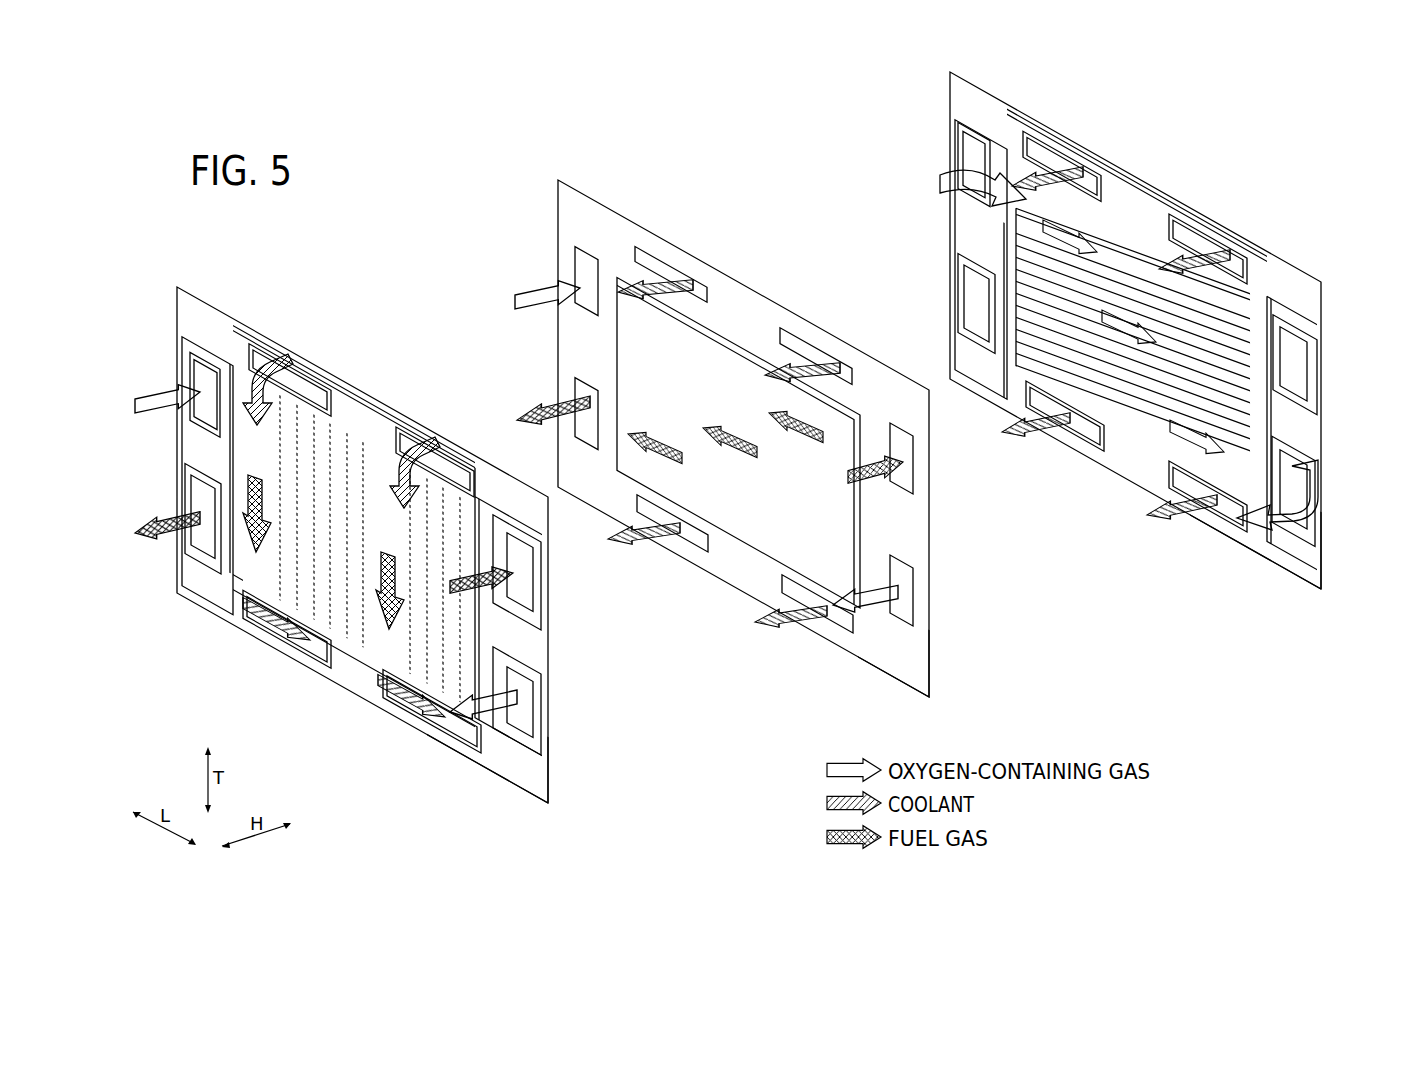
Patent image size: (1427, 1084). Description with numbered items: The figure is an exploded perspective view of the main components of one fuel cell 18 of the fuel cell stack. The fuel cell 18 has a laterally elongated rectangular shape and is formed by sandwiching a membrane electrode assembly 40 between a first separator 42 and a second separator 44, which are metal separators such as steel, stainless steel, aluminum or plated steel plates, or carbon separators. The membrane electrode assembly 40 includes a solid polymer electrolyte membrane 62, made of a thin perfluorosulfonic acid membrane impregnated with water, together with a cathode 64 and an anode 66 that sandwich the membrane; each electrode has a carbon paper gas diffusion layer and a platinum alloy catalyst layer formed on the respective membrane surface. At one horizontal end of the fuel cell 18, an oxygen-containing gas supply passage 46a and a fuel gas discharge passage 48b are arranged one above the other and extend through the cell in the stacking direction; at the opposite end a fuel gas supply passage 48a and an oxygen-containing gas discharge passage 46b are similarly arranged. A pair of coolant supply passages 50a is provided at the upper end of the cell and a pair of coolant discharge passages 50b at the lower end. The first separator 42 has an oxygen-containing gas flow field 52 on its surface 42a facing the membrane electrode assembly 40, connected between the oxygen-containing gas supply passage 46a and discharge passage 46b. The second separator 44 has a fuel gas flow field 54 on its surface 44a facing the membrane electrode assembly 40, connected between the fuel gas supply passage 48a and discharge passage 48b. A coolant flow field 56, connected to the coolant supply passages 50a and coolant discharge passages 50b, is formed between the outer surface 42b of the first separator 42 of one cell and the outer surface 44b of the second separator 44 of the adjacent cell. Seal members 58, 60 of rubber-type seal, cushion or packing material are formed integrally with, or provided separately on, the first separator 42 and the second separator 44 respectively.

The fuel cell 18 is at (367, 239).
The membrane electrode assembly 40 is at (556, 196).
The first separator 42 is at (948, 89).
The surface of the first separator 42a is at (1265, 545).
The surface of the first separator 42b is at (1304, 556).
The second separator 44 is at (174, 302).
The surface of the second separator 44a is at (524, 772).
The surface of the second separator 44b is at (492, 757).
The oxygen-containing gas supply passage 46a is at (200, 377).
The oxygen-containing gas discharge passage 46b is at (533, 720).
The fuel gas supply passage 48a is at (530, 576).
The fuel gas discharge passage 48b is at (200, 518).
The coolant supply passages 50a is at (307, 372).
The coolant discharge passages 50b is at (307, 667).
The oxygen-containing gas flow field 52 is at (1118, 240).
The fuel gas flow field 54 is at (462, 434).
The coolant flow field 56 is at (278, 556).
The seal member 58 is at (1172, 198).
The seal member 60 is at (358, 392).
The solid polymer electrolyte membrane 62 is at (918, 660).
The cathode 64 is at (713, 343).
The anode 66 is at (753, 380).